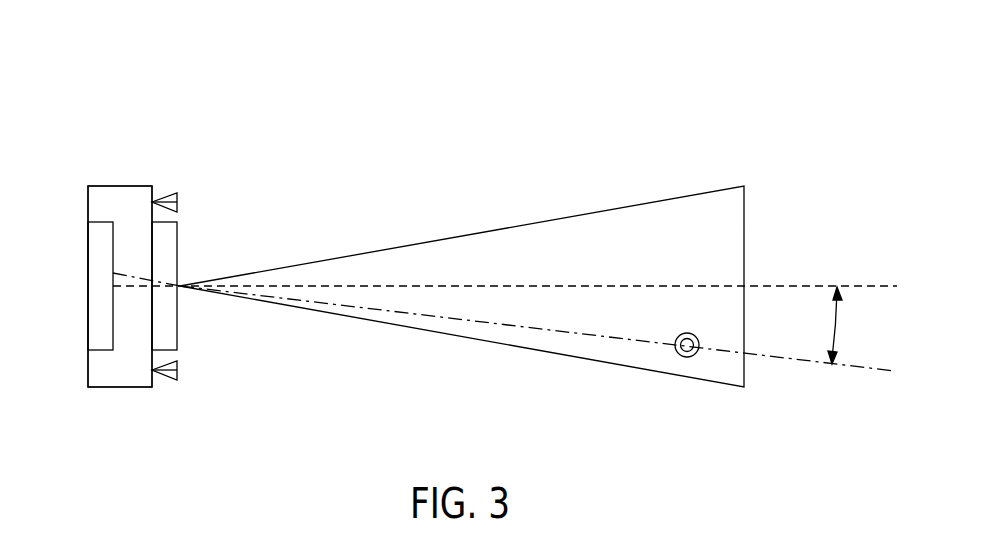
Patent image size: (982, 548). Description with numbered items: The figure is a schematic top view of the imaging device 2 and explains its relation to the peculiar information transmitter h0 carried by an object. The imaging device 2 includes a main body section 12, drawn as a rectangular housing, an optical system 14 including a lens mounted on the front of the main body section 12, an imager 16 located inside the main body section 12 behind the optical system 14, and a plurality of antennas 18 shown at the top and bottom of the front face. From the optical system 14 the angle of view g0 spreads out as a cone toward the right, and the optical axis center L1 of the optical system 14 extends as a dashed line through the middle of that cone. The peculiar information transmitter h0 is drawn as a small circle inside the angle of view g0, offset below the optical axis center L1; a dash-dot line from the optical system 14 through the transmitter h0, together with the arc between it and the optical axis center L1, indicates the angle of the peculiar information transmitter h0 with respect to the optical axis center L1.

The imaging device 2 is at (83, 92).
The main body section 12 is at (120, 186).
The optical system 14 is at (171, 325).
The imager 16 is at (92, 258).
The antennas 18 is at (180, 375).
The angle of view g0 is at (640, 204).
The optical axis center L1 is at (790, 282).
The peculiar information transmitter h0 is at (686, 358).